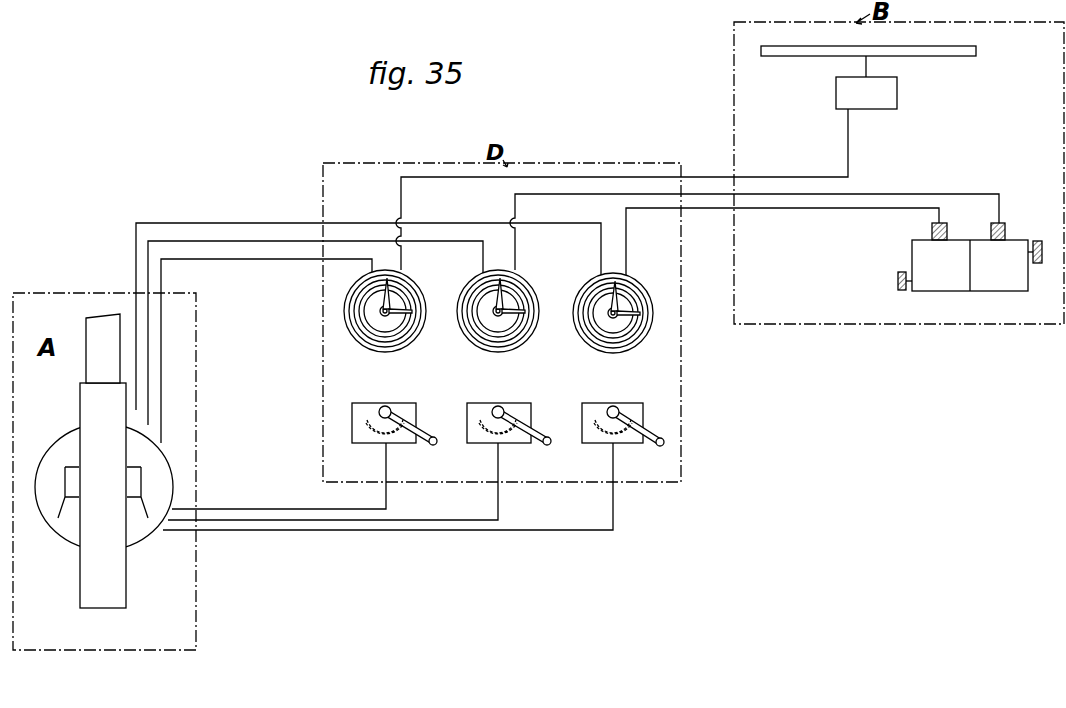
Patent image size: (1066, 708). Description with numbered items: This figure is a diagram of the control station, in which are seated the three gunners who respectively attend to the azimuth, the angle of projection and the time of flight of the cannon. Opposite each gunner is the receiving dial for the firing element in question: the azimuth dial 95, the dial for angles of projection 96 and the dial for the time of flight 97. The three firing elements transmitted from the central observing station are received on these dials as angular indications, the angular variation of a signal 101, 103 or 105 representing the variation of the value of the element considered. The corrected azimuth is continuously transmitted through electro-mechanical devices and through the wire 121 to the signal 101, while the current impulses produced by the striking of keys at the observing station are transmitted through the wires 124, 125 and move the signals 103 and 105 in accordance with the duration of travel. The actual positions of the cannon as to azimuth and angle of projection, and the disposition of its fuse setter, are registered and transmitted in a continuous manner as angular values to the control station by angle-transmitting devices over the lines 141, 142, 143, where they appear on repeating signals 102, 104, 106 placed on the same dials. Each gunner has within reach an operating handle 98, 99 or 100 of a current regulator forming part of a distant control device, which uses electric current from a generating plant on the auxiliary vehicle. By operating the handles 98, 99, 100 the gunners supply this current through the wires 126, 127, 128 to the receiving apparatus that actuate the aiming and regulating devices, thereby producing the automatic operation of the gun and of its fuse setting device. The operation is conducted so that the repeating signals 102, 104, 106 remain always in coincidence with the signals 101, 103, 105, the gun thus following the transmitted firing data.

The azimuth dial 95 is at (371, 349).
The dial for angles of projection 96 is at (484, 349).
The dial for the time of flight 97 is at (602, 351).
The operating handle 98 is at (394, 439).
The operating handle 99 is at (509, 440).
The operating handle 100 is at (623, 439).
The signal 101 is at (381, 297).
The repeating signal 102 is at (407, 323).
The signal 103 is at (493, 298).
The repeating signal 104 is at (520, 323).
The signal 105 is at (607, 300).
The repeating signal 106 is at (625, 325).
The wire 121 is at (725, 178).
The wire 124 is at (783, 192).
The wire 125 is at (782, 241).
The wire 126 is at (275, 503).
The wire 127 is at (275, 527).
The wire 128 is at (379, 535).
The line 141 is at (287, 264).
The line 142 is at (220, 235).
The line 143 is at (170, 215).